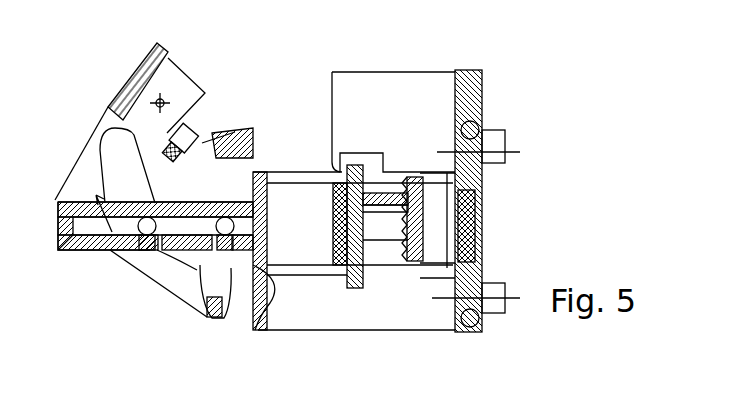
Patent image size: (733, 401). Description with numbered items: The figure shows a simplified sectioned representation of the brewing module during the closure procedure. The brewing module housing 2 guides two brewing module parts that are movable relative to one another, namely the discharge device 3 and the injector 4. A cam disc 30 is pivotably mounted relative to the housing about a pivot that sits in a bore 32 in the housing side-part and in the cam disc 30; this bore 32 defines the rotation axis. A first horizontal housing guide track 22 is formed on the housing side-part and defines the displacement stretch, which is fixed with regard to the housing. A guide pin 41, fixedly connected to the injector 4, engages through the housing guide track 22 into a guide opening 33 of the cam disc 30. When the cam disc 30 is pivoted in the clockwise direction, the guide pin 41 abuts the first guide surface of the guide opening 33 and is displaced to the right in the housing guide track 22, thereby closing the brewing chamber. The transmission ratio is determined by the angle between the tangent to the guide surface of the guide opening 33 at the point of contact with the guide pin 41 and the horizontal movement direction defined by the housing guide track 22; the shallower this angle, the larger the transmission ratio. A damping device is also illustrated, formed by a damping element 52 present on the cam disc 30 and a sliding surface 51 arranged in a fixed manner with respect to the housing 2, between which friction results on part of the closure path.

The brewing module housing 2 is at (420, 105).
The discharge device 3 is at (485, 205).
The injector 4 is at (390, 228).
The first horizontal housing guide track 22 is at (85, 203).
The cam disc 30 is at (167, 88).
The bore 32 is at (222, 212).
The guide opening 33 is at (118, 170).
The guide pin 41 is at (145, 235).
The sliding surface 51 is at (238, 137).
The damping element 52 is at (171, 143).